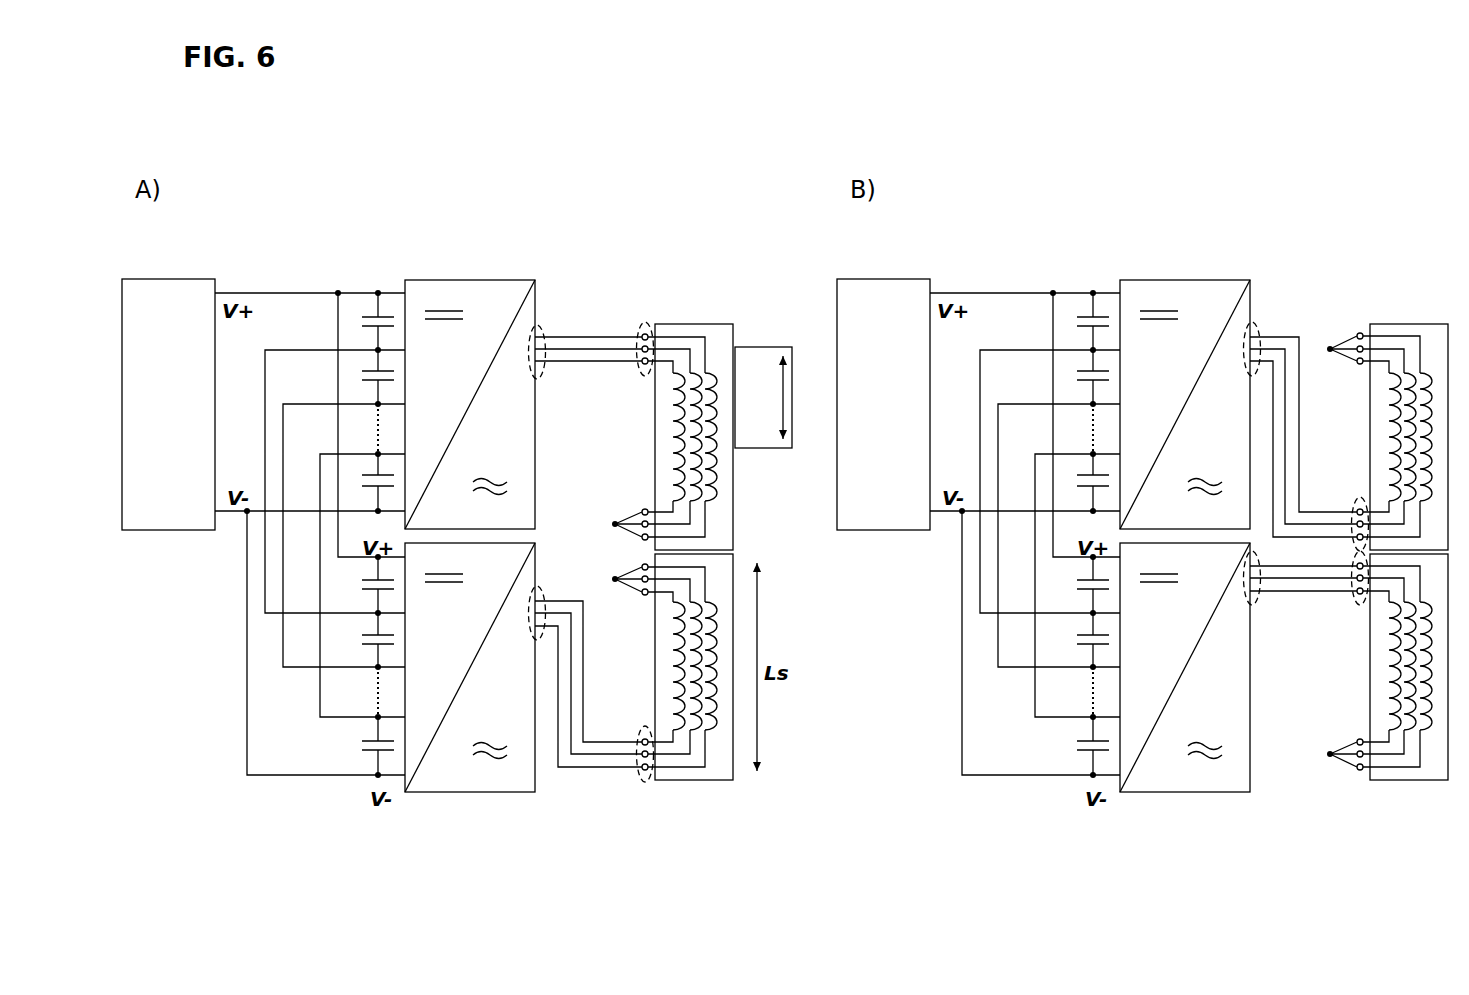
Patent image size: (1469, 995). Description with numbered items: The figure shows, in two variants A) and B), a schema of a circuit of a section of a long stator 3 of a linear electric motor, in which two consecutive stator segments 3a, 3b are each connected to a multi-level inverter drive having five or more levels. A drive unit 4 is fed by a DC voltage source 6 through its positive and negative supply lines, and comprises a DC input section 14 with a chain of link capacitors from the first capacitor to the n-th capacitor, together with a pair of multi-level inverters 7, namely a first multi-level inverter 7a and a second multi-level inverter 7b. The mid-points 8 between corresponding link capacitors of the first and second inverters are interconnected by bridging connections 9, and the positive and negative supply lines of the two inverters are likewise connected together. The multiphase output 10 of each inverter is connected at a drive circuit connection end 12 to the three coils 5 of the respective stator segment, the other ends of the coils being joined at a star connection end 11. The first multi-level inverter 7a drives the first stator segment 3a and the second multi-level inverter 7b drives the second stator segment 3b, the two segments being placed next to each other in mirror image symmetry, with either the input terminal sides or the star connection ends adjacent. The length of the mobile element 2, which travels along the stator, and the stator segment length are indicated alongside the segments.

The mobile element 2 is at (762, 347).
The stator 3 is at (688, 320).
The first stator segment 3a is at (991, 410).
The second stator segment 3b is at (720, 770).
The drive unit 4 is at (538, 250).
The coils 5 is at (692, 492).
The DC voltage source 6 is at (159, 534).
The multi-level inverters 7 is at (827, 549).
The first multi-level inverter 7a is at (455, 280).
The second multi-level inverter 7b is at (455, 792).
The mid-point 8 is at (374, 348).
The mid-point bridge connection 9 is at (265, 585).
The multiphase output 10 is at (550, 326).
The star connection end 11 is at (614, 524).
The drive circuit connection end 12 is at (645, 318).
The DC input section 14 is at (398, 288).